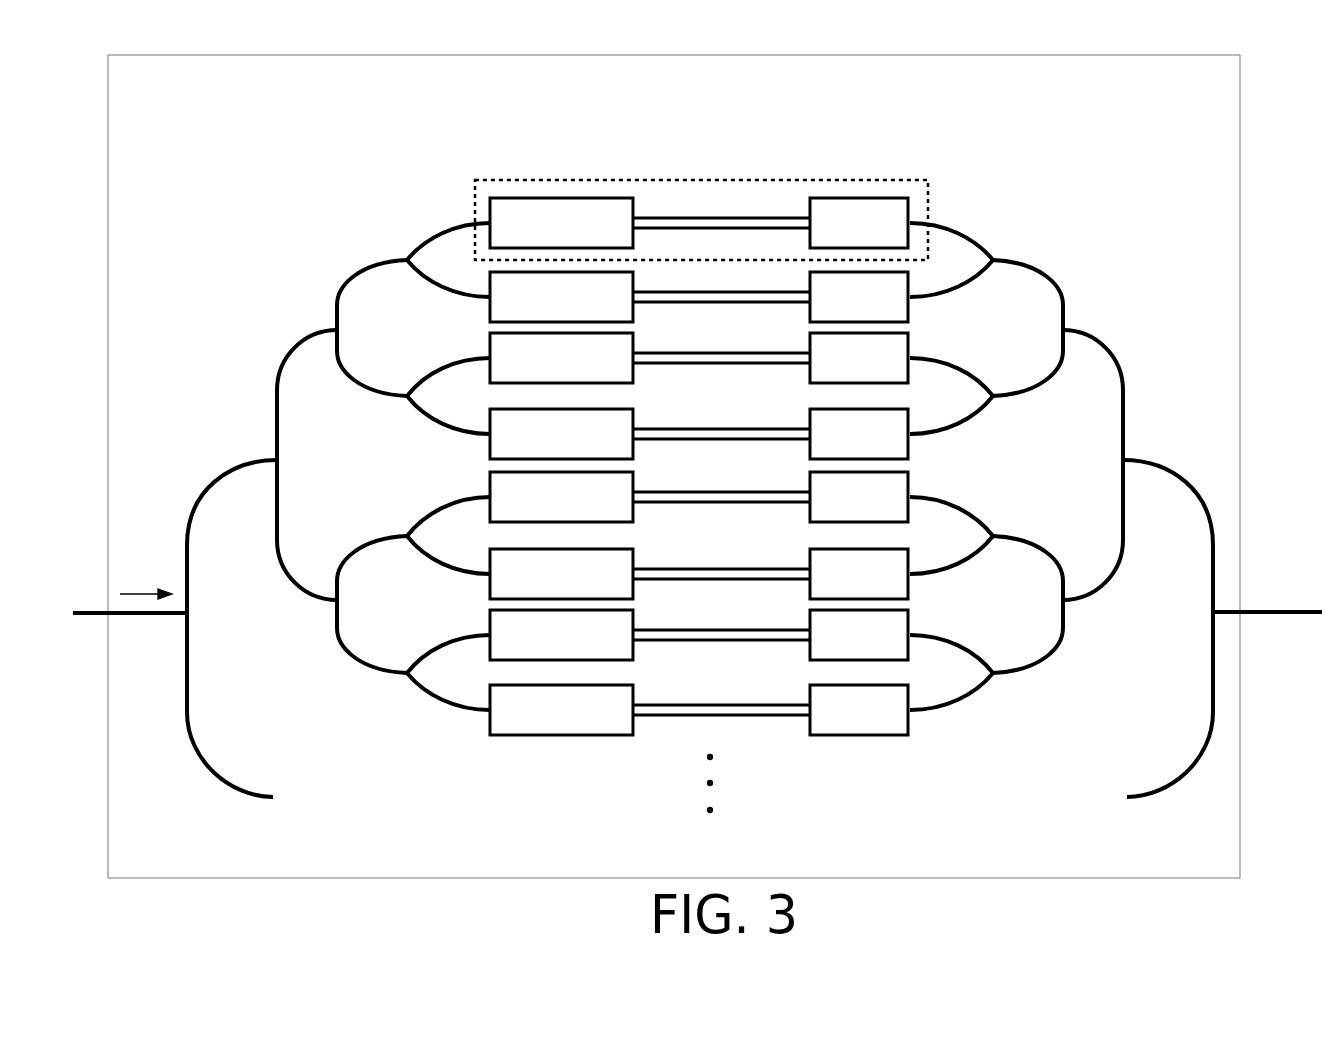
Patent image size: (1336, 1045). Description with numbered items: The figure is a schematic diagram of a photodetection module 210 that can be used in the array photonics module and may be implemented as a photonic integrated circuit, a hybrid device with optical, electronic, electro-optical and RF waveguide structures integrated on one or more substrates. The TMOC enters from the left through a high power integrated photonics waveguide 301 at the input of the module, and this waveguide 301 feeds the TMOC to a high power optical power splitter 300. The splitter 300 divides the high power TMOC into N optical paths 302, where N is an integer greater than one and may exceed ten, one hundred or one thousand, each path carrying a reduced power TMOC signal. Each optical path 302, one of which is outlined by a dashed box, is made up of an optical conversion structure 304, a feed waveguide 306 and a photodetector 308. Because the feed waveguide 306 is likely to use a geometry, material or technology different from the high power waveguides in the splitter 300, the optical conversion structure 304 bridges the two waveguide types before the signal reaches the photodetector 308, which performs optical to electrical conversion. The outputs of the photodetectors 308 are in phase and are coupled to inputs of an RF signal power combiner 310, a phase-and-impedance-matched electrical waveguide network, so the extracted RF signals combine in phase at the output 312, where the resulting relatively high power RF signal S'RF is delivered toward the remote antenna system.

The photodetection module 210 is at (674, 466).
The high power optical power splitter 300 is at (143, 167).
The high power integrated photonics waveguide 301 is at (152, 618).
The optical path 302 is at (653, 181).
The optical conversion structure 304 is at (561, 466).
The feed waveguide 306 is at (680, 219).
The photodetector 308 is at (859, 466).
The RF signal power combiner 310 is at (907, 167).
The output of the RF combiner 312 is at (1278, 607).